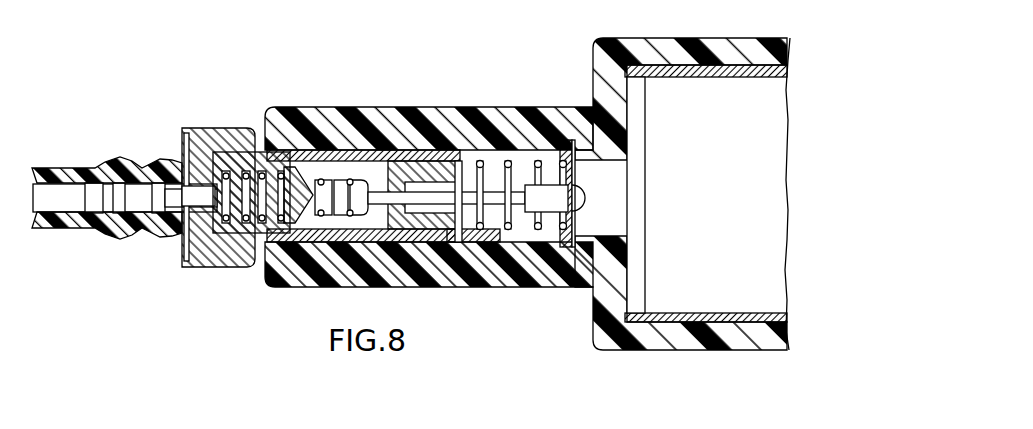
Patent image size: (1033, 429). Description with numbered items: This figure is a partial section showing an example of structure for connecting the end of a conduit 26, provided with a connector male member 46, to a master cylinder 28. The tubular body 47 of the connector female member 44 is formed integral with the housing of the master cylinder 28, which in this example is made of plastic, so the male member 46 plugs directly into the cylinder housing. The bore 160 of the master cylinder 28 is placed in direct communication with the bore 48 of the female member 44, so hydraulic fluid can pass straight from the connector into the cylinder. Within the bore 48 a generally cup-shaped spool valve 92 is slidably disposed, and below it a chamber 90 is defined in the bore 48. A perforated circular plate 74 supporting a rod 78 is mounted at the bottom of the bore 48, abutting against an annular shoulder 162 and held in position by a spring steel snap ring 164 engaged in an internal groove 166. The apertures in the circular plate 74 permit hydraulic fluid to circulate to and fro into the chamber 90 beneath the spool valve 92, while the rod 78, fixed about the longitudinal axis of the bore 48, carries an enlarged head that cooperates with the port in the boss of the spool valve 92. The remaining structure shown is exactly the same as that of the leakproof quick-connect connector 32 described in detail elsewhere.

The conduit 26 is at (67, 169).
The connector male member 46 is at (226, 128).
The leakproof quick-connect connector 32 is at (275, 107).
The connector female member 44 is at (413, 107).
The tubular body 47 is at (462, 128).
The bore 48 is at (522, 152).
The spring steel snap ring 164 is at (560, 147).
The bore of the master cylinder 160 is at (688, 88).
The circular plate 74 is at (580, 196).
The master cylinder 28 is at (727, 351).
The rod 78 is at (420, 197).
The chamber 90 is at (497, 243).
The spool valve 92 is at (457, 240).
The annular shoulder 162 is at (560, 247).
The internal groove 166 is at (567, 243).